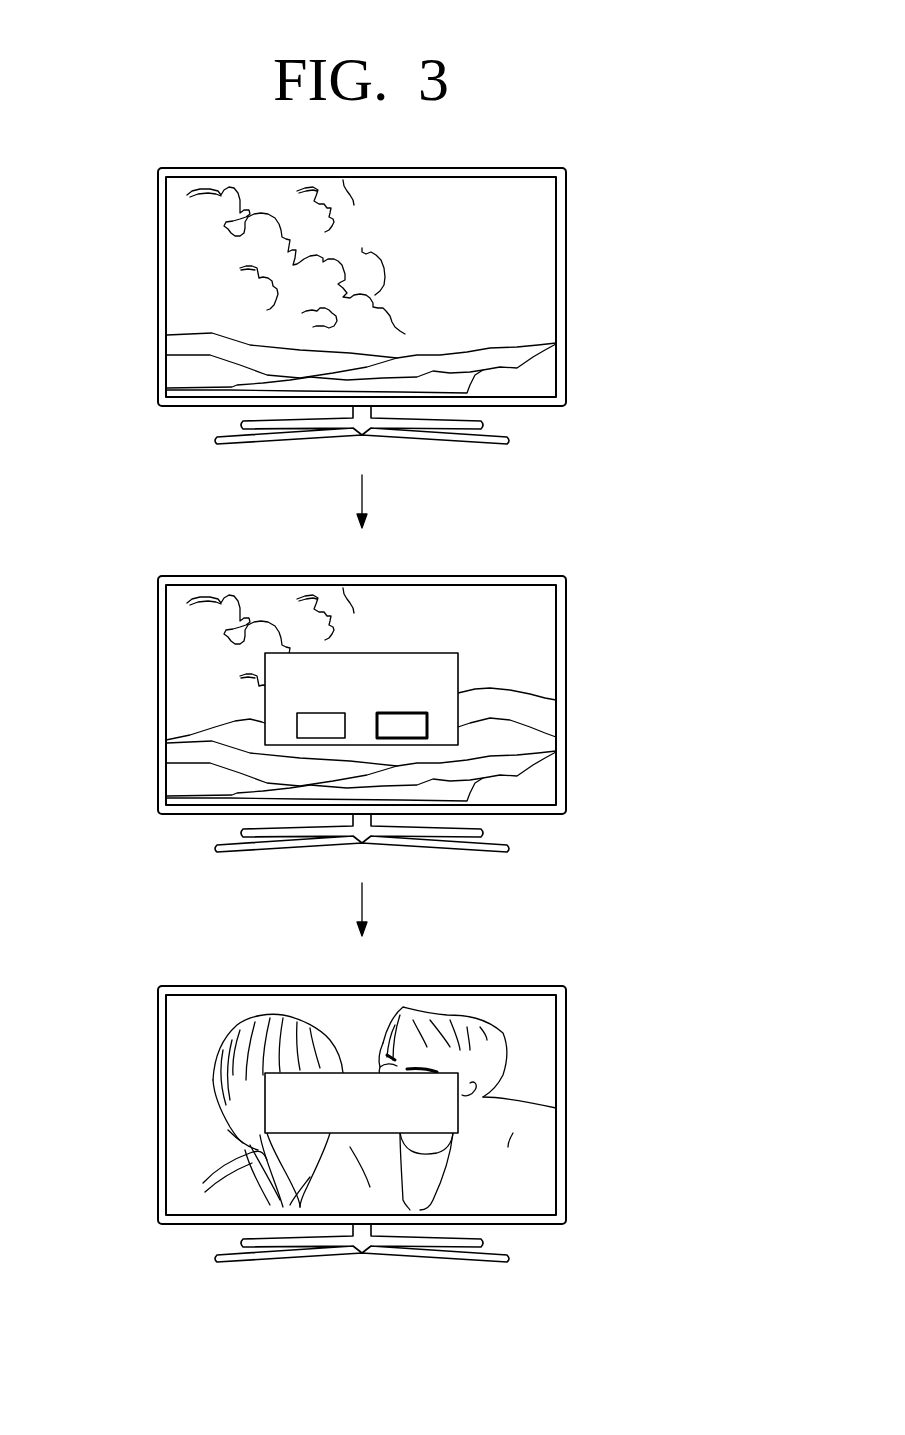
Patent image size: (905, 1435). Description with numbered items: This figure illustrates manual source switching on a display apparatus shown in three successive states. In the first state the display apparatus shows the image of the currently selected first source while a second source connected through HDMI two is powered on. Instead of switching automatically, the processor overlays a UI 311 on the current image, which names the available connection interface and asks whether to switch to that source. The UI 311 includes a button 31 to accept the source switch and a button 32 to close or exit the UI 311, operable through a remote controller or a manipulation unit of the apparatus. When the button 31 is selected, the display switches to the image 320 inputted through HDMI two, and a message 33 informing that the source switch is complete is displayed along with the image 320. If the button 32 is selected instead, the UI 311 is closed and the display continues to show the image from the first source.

The UI 311 is at (366, 703).
The button to accept the source switch 31 is at (556, 738).
The button to close or exit the UI 32 is at (166, 740).
The image 320 is at (175, 1128).
The message 33 is at (556, 1108).